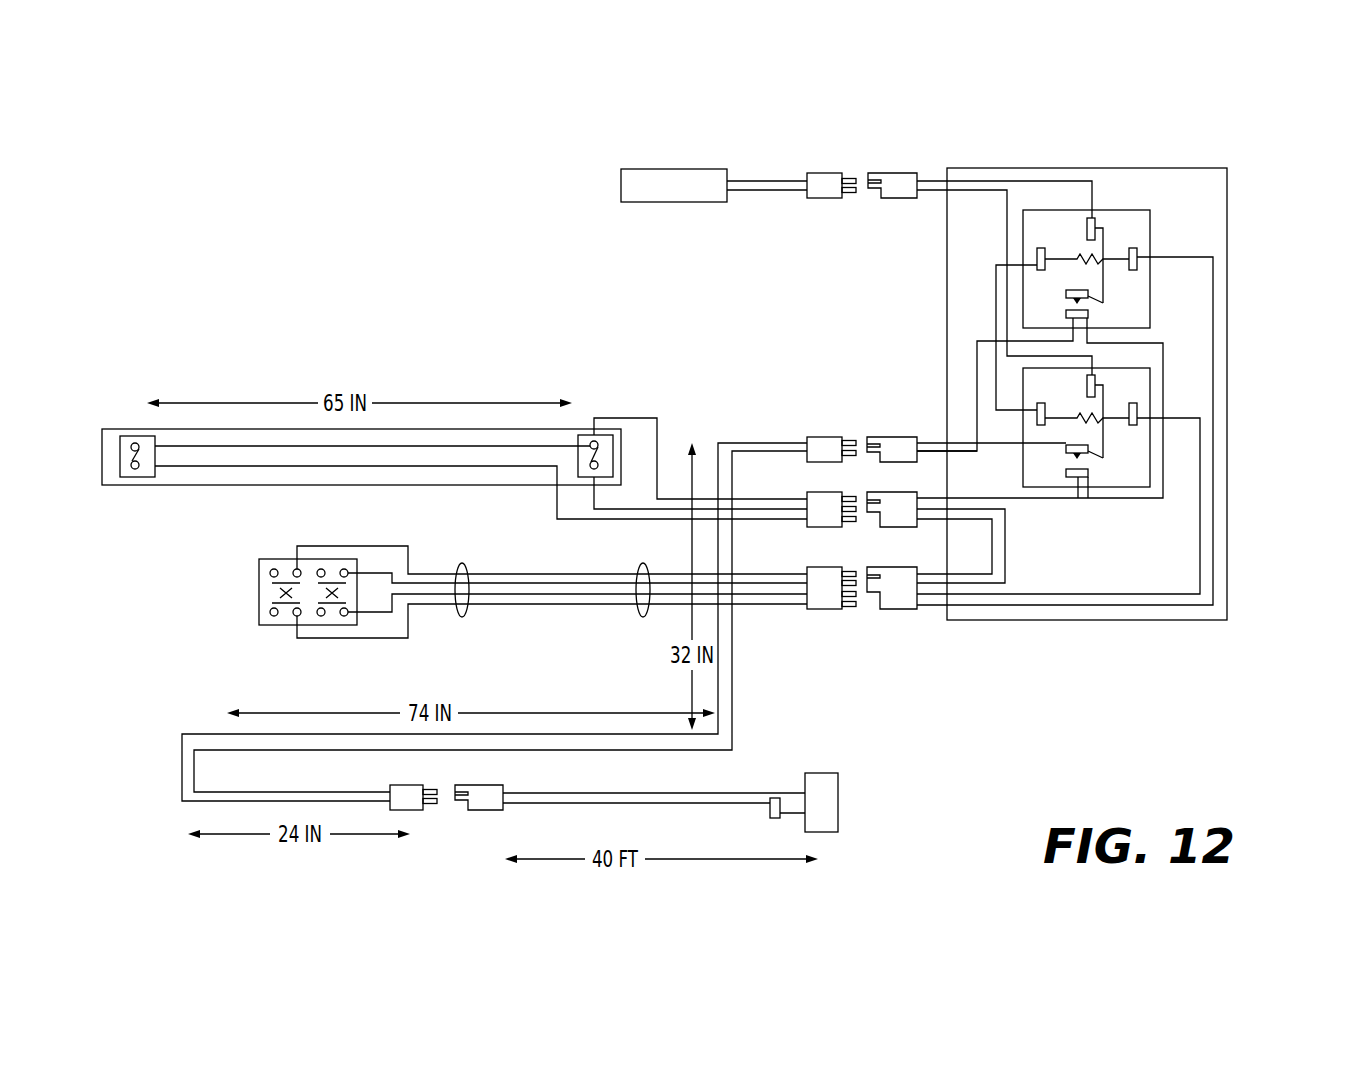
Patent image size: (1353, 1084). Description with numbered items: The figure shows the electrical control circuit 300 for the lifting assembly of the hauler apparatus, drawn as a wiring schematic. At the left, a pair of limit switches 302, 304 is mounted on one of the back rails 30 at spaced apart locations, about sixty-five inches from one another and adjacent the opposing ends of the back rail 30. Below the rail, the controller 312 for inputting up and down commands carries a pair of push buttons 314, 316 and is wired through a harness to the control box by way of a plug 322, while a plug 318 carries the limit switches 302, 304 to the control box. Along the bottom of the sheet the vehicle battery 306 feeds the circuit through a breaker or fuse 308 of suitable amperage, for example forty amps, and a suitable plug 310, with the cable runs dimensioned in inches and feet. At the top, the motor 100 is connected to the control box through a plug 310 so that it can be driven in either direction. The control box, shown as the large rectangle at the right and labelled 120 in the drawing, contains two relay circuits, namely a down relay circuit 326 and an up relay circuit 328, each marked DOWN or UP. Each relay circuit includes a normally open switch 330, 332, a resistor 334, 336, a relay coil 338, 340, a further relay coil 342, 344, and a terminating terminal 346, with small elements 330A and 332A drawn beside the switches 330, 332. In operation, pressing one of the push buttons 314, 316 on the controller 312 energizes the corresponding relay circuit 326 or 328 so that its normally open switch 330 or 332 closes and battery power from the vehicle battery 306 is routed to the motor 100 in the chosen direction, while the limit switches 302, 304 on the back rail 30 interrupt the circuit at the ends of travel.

The back rail 30 is at (117, 429).
The motor 100 is at (655, 169).
The control unit 120 is at (1137, 168).
The control circuit 300 is at (455, 305).
The limit switch 302 is at (147, 477).
The limit switch 304 is at (612, 447).
The vehicle battery 306 is at (838, 813).
The fuse 308 is at (775, 818).
The plug 310 is at (802, 428).
The controller 312 is at (269, 538).
The push button 314 is at (286, 616).
The push button 316 is at (332, 616).
The plug 318 is at (802, 488).
The plug 322 is at (803, 563).
The down relay circuit 326 is at (1195, 304).
The up relay circuit 328 is at (1252, 568).
The normally open switch 330 is at (826, 212).
The diode 330A is at (1066, 294).
The normally open switch 332 is at (1066, 476).
The diode 332A is at (1066, 452).
The resistor 334 is at (1103, 262).
The resistor 336 is at (1103, 421).
The relay coil 338 is at (1137, 252).
The relay coil 340 is at (1137, 408).
The relay coil 342 is at (1037, 256).
The relay coil 344 is at (1037, 410).
The terminating terminal 346 is at (1095, 222).